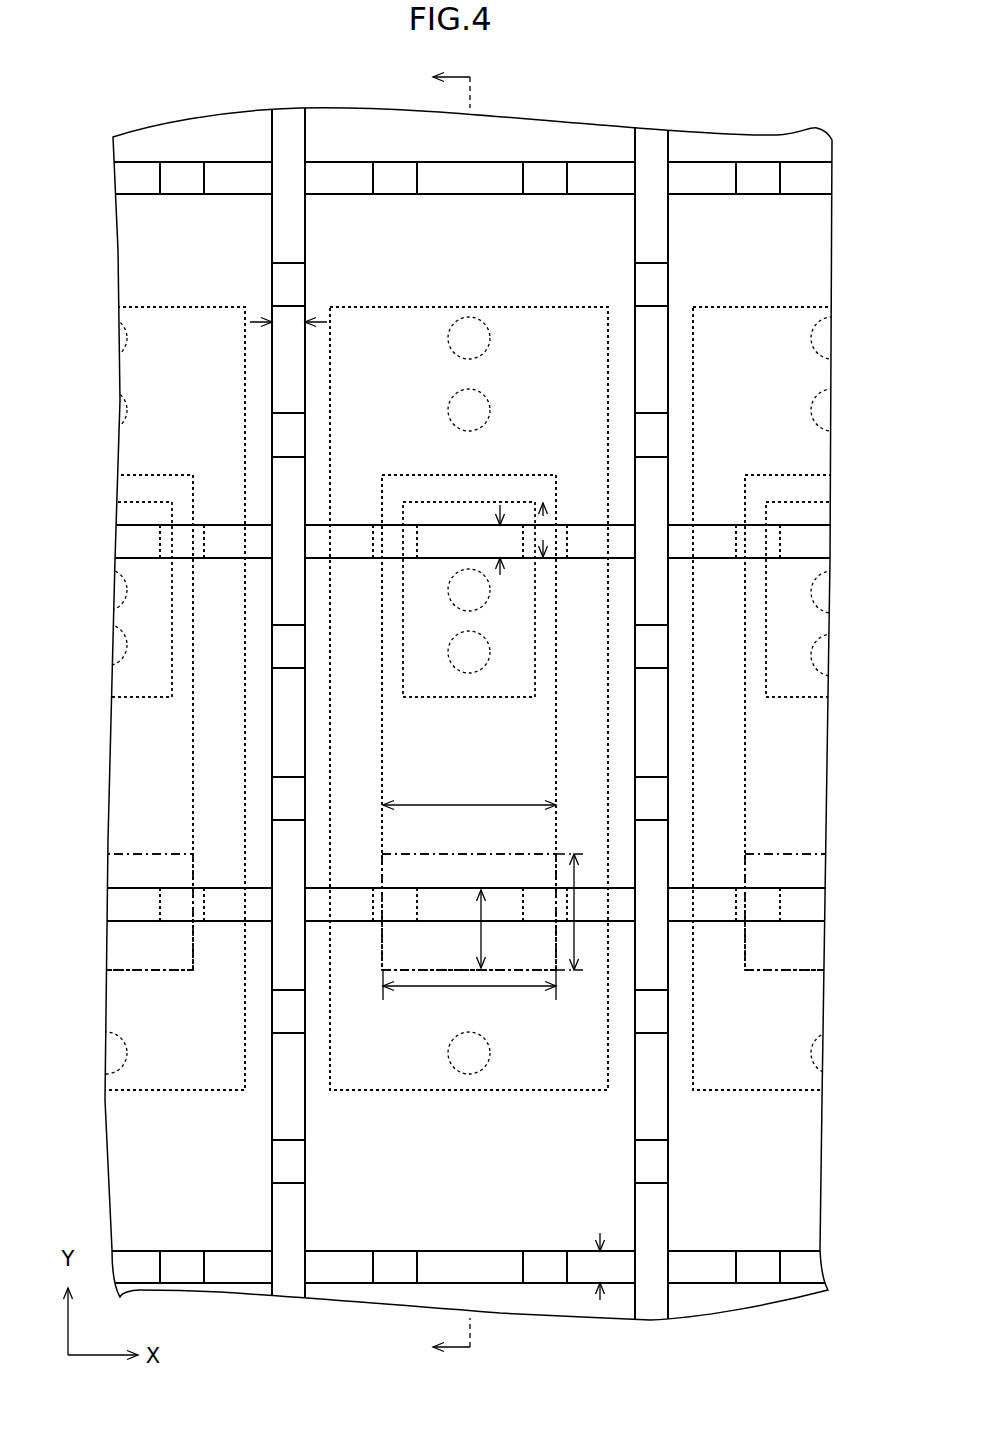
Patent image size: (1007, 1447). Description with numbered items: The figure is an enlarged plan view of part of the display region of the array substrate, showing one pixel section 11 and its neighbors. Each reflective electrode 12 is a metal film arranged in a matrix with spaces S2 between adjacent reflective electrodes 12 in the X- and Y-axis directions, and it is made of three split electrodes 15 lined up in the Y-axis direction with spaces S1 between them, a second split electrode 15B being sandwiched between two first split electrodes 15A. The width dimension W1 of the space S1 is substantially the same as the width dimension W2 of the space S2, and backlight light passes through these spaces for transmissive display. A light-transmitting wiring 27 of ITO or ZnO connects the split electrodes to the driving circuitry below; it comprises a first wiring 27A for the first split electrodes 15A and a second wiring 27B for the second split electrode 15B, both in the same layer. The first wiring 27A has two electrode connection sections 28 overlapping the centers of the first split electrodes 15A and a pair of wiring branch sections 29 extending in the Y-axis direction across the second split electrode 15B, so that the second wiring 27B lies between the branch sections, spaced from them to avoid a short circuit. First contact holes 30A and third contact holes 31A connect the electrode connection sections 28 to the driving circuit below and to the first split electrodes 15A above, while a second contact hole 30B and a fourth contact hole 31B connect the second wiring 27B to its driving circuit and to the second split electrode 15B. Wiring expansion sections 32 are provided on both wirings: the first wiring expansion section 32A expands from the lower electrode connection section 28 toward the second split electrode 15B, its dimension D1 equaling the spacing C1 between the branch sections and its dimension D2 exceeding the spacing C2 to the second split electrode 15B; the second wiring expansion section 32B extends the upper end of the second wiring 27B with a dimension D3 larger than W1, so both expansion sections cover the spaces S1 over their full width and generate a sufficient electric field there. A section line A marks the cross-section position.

The pixel section 11 is at (388, 190).
The reflective electrode 12 is at (302, 953).
The split electrode 15 is at (723, 92).
The first split electrode 15A is at (622, 953).
The second split electrode 15B is at (620, 710).
The wiring 27 is at (58, 300).
The first wiring 27A is at (330, 372).
The second wiring 27B is at (537, 632).
The electrode connection section 28 is at (385, 1093).
The wiring branch section 29 is at (550, 686).
The first contact hole 30A is at (474, 318).
The second contact hole 30B is at (833, 594).
The third contact hole 31A is at (484, 1070).
The fourth contact hole 31B is at (833, 656).
The wiring expansion section 32 is at (58, 398).
The first wiring expansion section 32A is at (843, 903).
The second wiring expansion section 32B is at (848, 539).
The space S1 is at (588, 915).
The second space S2 is at (438, 1268).
The section line A is at (452, 714).
The width dimension of space S1 W1 is at (484, 540).
The width dimension of space S2 W2 is at (444, 809).
The dimension in the X-axis direction D1 is at (469, 993).
The dimension in the Y-axis direction D2 is at (587, 912).
The dimension in the Y-axis direction D3 is at (556, 530).
The spacing C1 is at (469, 794).
The spacing C2 is at (496, 929).